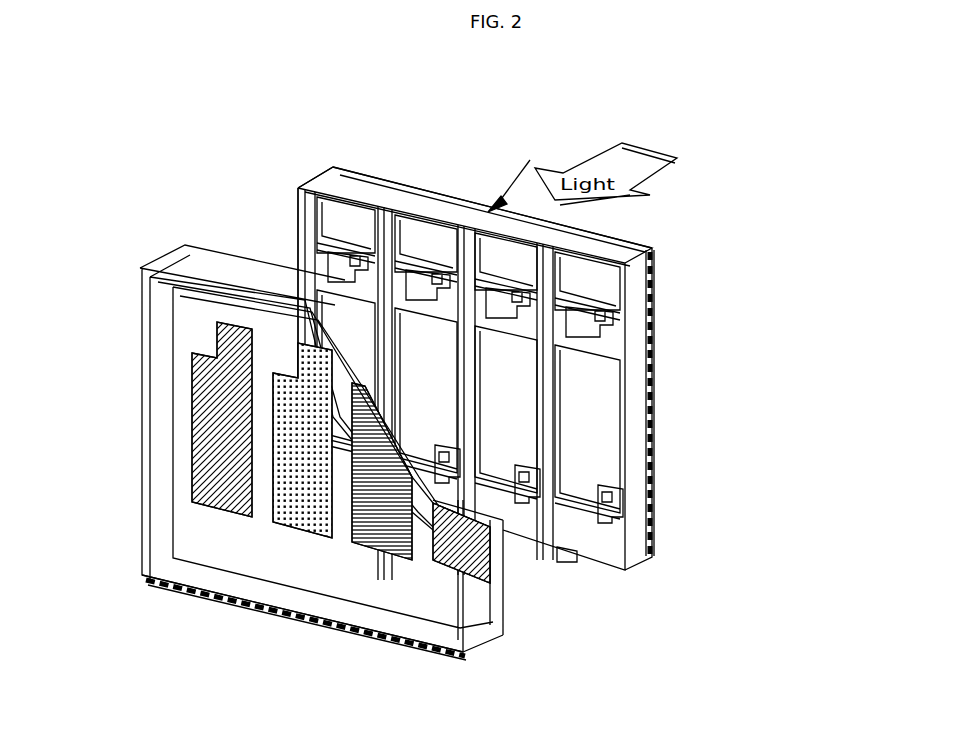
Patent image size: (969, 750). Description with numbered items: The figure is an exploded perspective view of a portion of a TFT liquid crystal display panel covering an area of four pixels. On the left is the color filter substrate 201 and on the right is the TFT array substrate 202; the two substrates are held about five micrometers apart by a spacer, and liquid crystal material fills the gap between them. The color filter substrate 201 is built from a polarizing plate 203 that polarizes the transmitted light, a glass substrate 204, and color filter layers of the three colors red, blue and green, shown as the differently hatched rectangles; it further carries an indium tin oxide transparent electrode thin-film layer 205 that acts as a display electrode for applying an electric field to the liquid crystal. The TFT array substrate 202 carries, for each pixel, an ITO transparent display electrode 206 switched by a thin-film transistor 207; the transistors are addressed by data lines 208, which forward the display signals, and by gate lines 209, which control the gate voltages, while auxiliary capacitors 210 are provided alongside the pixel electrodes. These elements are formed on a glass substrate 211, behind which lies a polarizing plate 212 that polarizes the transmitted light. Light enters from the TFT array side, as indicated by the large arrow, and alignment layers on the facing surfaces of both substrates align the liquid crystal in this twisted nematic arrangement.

The color filter substrate 201 is at (205, 600).
The TFT array substrate 202 is at (475, 331).
The polarizing plate 203 is at (342, 625).
The glass substrate 204 is at (473, 635).
The transparent electrode thin-film layer 205 is at (503, 600).
The transparent display electrodes 206 is at (600, 417).
The thin-film transistors 207 is at (335, 263).
The data lines 208 is at (305, 213).
The gate lines 209 is at (630, 252).
The auxiliary capacitors 210 is at (345, 218).
The glass substrate 211 is at (403, 193).
The polarizing plate 212 is at (655, 352).